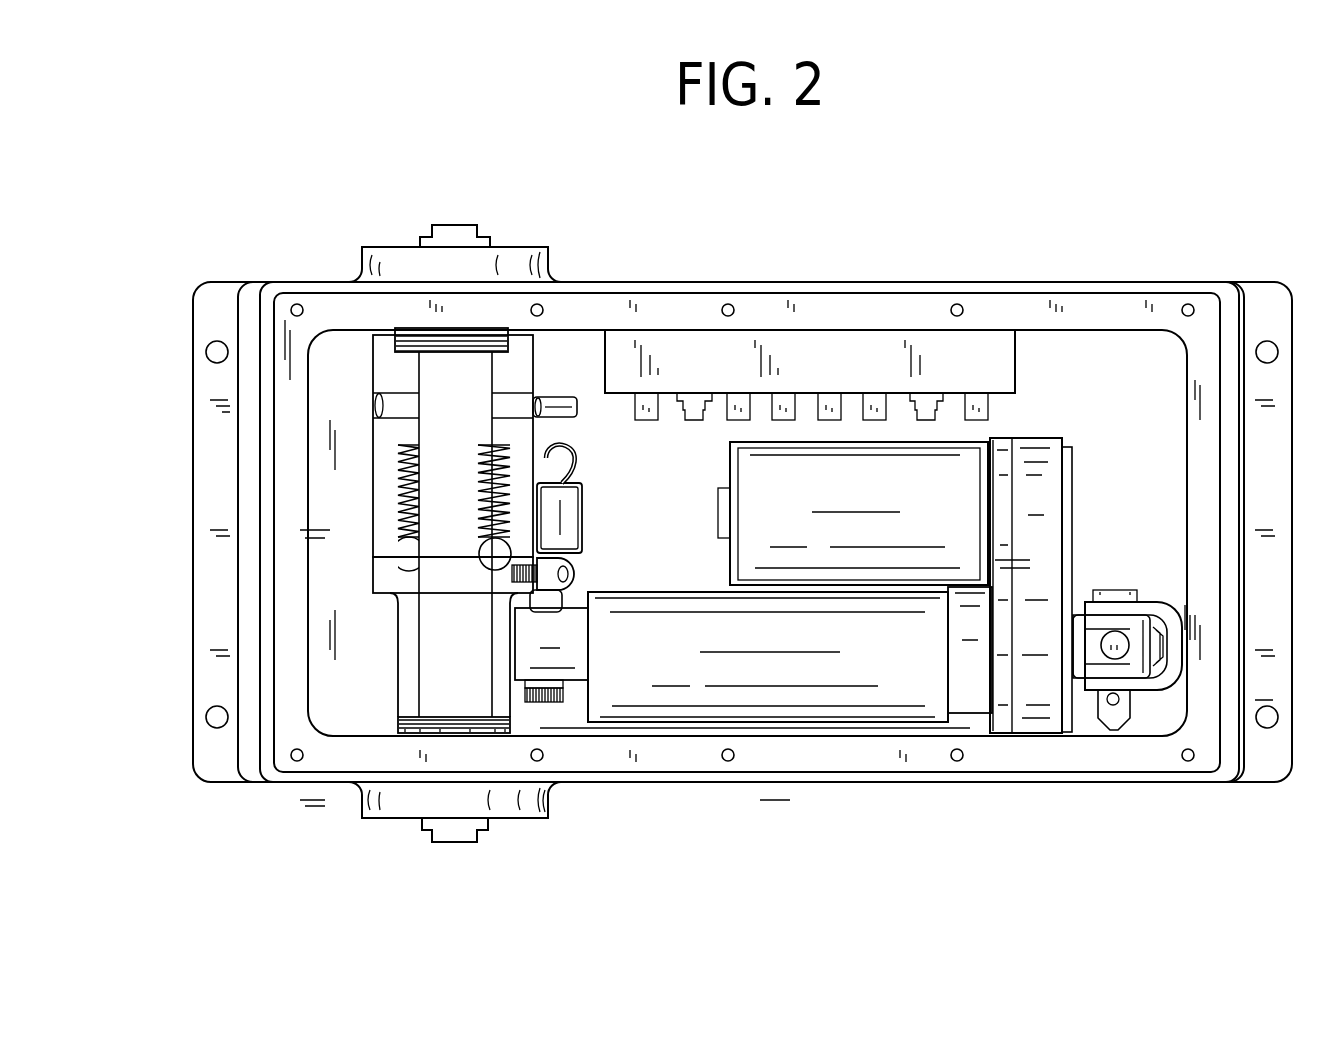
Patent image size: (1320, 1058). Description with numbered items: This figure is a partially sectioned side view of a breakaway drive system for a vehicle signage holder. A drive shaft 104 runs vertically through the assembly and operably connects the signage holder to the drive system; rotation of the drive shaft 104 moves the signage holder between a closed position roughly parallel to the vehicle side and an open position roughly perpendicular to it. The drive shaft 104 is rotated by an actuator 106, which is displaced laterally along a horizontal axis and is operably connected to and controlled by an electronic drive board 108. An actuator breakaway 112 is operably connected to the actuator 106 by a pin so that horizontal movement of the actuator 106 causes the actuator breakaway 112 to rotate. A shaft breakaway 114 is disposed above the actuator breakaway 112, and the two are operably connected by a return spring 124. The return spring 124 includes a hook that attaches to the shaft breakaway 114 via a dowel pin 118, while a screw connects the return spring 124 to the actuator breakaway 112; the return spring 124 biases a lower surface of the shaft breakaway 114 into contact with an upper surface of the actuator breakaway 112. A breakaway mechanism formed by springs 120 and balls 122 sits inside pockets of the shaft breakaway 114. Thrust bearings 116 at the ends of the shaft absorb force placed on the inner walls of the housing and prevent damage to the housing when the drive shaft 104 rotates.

The drive shaft 104 is at (443, 226).
The actuator 106 is at (1043, 476).
The electronic drive board 108 is at (818, 362).
The actuator breakaway 112 is at (408, 680).
The shaft breakaway 114 is at (373, 370).
The thrust bearings 116 is at (473, 343).
The dowel pin 118 is at (397, 409).
The springs 120 is at (400, 497).
The balls 122 is at (412, 582).
The return spring 124 is at (548, 520).